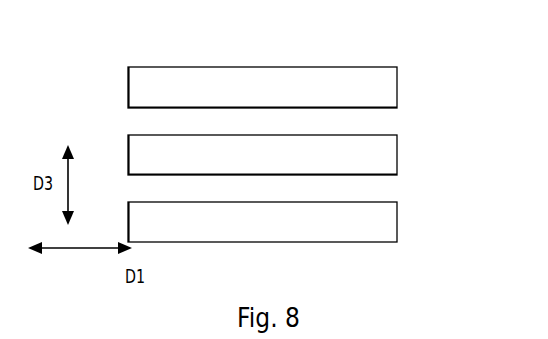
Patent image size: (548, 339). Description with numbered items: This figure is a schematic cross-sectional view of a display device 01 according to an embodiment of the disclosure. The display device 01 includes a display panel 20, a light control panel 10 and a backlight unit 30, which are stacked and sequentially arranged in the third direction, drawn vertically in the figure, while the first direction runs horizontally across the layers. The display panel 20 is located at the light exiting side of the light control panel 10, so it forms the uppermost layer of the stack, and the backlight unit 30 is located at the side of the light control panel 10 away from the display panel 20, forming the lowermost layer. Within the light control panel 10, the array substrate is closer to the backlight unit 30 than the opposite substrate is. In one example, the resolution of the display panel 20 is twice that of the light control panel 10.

The display device 01 is at (473, 38).
The display panel 20 is at (368, 85).
The light control panel 10 is at (367, 156).
The backlight unit 30 is at (366, 222).